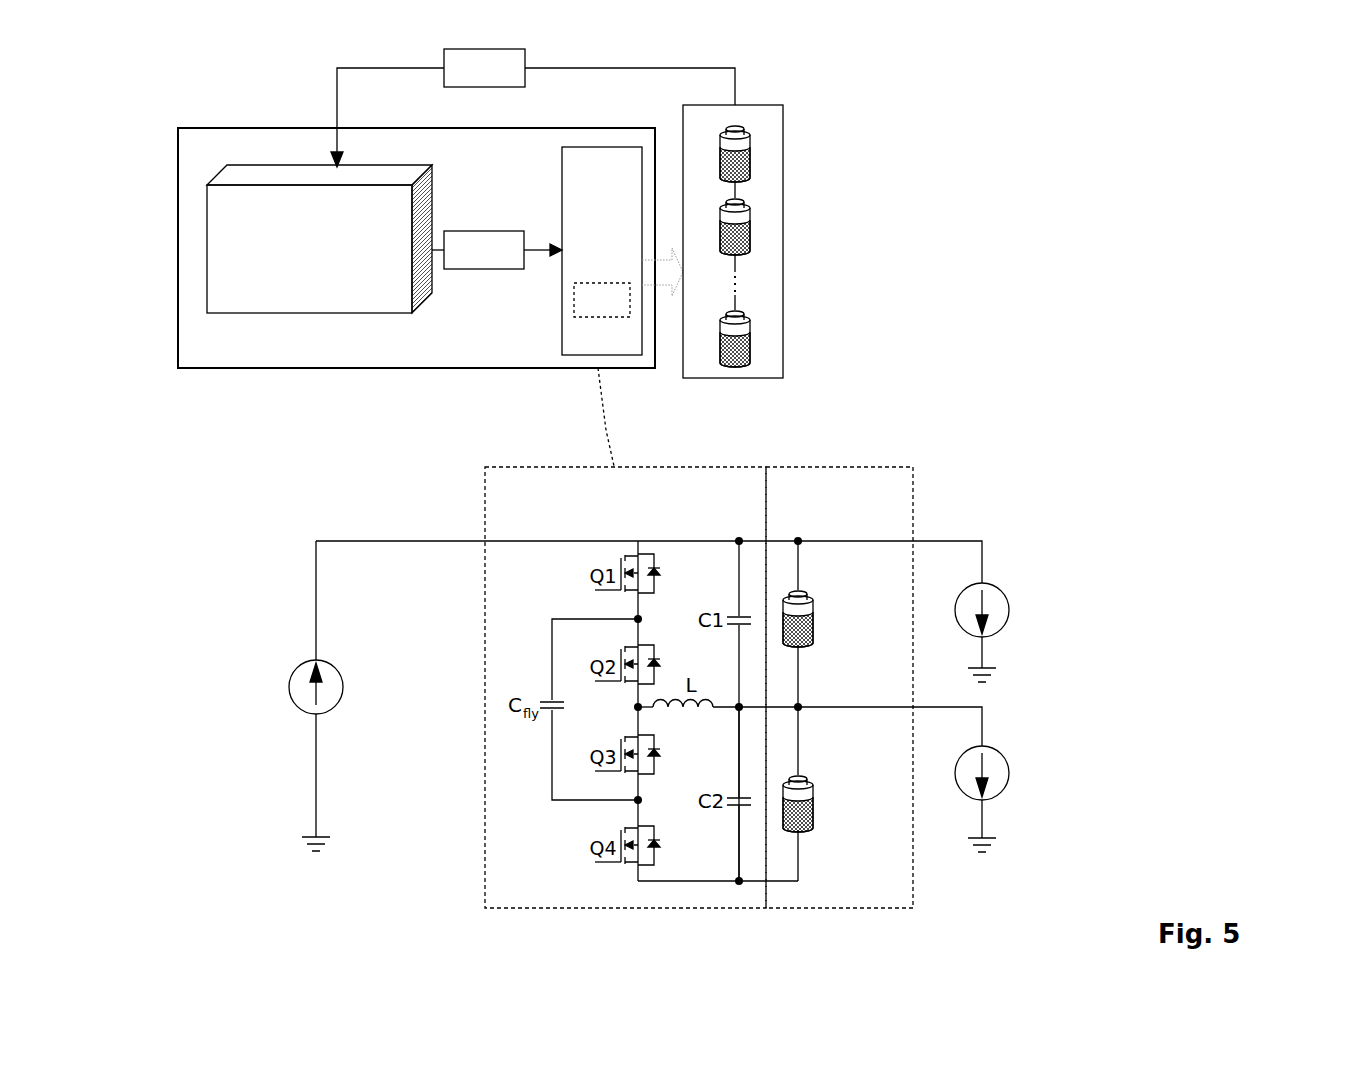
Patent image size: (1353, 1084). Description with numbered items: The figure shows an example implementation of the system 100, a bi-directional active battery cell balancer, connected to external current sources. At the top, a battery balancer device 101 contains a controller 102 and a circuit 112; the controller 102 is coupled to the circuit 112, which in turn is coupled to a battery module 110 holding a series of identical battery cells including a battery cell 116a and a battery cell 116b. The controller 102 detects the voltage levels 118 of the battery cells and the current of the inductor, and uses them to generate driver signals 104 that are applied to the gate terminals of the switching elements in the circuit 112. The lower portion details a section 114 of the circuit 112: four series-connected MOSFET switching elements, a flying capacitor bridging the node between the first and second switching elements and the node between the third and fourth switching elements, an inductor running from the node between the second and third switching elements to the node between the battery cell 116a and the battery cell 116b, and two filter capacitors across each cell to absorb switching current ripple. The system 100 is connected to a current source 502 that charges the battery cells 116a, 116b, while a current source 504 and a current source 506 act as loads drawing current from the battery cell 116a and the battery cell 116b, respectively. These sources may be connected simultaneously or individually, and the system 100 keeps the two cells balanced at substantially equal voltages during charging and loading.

The system 100 is at (1142, 849).
The battery balancer device 101 is at (545, 162).
The controller 102 is at (258, 246).
The driver signals 104 is at (477, 300).
The battery module 110 is at (783, 378).
The circuit 112 is at (571, 247).
The section 114 is at (492, 497).
The battery cell 116a is at (750, 152).
The battery cell 116b is at (750, 226).
The voltage levels 118 is at (533, 108).
The current source 502 is at (262, 684).
The current source 504 is at (1111, 611).
The current source 506 is at (1111, 774).